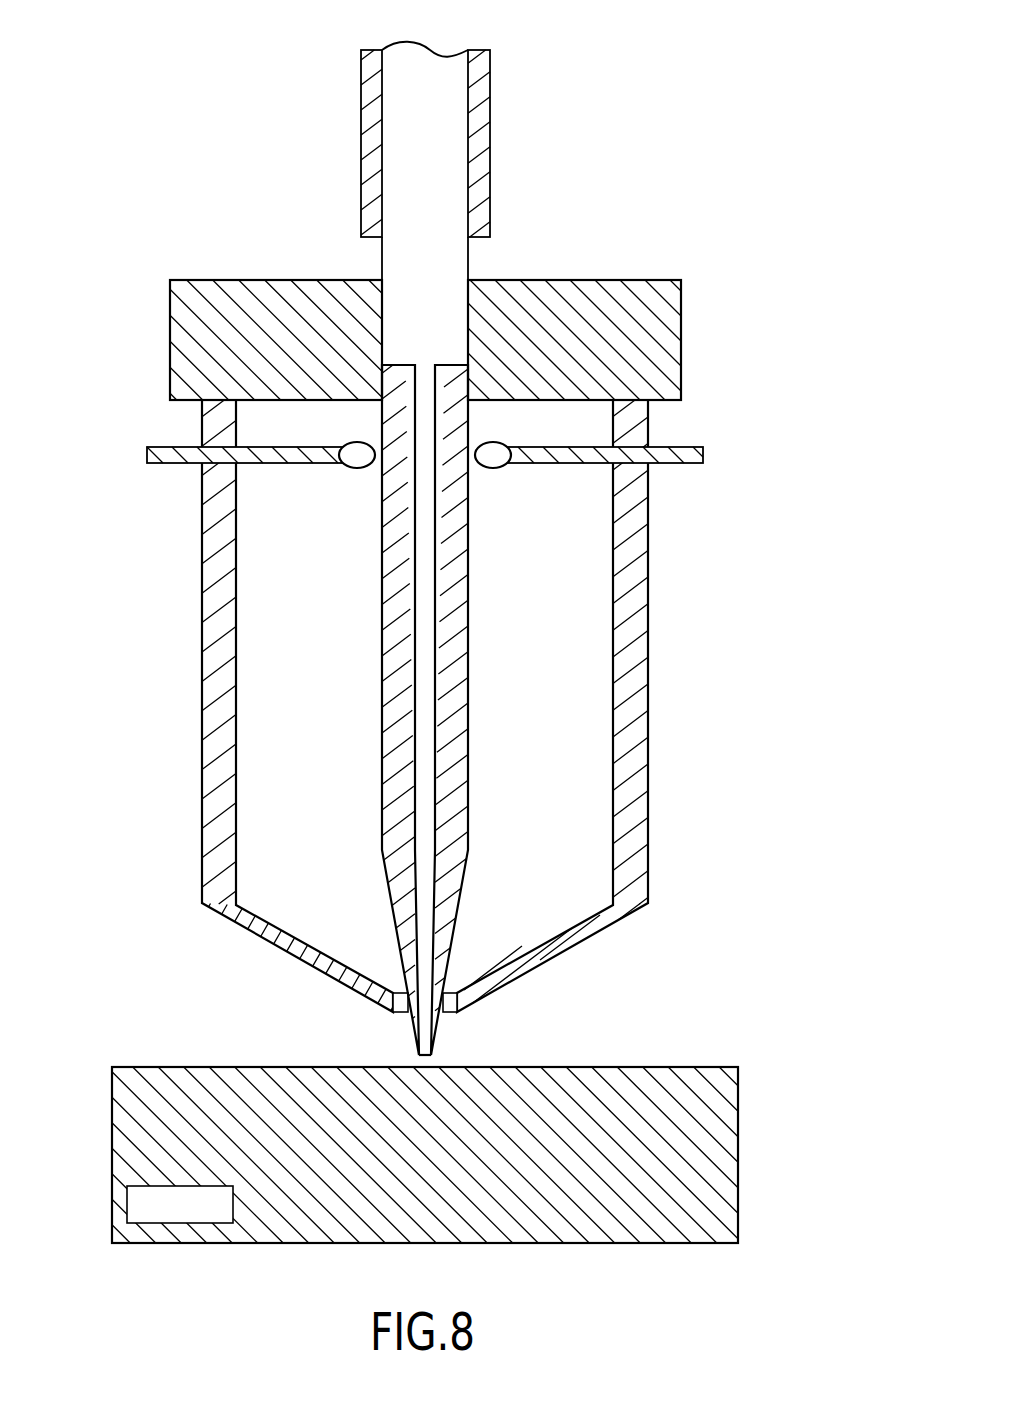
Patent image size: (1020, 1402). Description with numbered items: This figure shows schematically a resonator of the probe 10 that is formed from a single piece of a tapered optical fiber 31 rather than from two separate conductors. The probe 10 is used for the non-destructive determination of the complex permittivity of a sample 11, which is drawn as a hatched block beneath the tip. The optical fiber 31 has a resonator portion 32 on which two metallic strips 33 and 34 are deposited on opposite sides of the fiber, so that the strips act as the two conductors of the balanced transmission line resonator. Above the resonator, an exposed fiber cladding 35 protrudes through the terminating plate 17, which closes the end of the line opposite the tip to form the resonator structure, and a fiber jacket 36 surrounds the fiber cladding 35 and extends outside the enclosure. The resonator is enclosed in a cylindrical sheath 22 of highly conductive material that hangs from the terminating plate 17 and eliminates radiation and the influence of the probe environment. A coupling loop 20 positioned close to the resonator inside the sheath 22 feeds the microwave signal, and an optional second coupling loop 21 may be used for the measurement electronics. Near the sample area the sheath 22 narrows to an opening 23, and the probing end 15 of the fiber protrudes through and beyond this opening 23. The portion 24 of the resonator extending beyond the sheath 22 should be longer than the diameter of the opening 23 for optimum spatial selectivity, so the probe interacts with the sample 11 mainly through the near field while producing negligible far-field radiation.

The probe 10 is at (678, 95).
The sample 11 is at (738, 1092).
The probing end 15 is at (336, 1004).
The terminating plate 17 is at (688, 320).
The coupling loop 20 is at (683, 452).
The second coupling loop 21 is at (172, 457).
The cylindrical sheath 22 is at (624, 625).
The opening 23 is at (445, 1005).
The portion of the resonator extending beyond the sheath 24 is at (433, 1033).
The optical fiber 31 is at (417, 303).
The resonator portion 32 is at (296, 690).
The metallic strip 33 is at (452, 627).
The metallic strip 34 is at (398, 652).
The fiber cladding 35 is at (404, 228).
The fiber jacket 36 is at (483, 148).